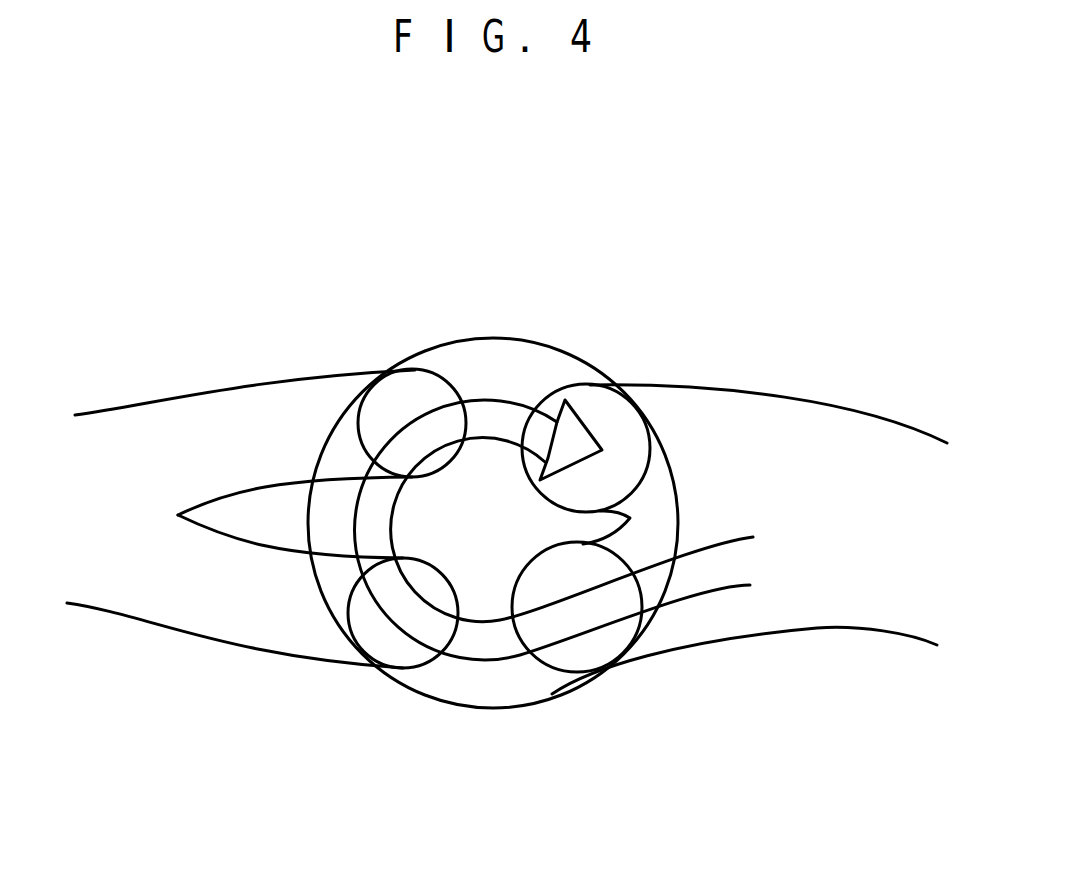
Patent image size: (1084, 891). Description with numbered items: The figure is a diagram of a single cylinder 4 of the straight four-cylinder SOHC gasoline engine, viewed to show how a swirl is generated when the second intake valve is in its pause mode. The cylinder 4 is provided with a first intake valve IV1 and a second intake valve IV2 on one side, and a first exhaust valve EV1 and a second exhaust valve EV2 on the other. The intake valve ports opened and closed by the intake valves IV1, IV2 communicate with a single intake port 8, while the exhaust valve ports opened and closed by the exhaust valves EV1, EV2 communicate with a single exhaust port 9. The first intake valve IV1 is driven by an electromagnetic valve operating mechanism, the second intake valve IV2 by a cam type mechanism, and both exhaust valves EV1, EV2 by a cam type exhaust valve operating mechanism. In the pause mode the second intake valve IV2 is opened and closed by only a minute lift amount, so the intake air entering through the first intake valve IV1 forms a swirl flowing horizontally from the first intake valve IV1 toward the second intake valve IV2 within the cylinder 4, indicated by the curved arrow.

The cylinder 4 is at (483, 340).
The intake port 8 is at (780, 432).
The exhaust port 9 is at (123, 435).
The first exhaust valve EV1 is at (398, 652).
The second exhaust valve EV2 is at (405, 388).
The first intake valve IV1 is at (587, 657).
The second intake valve IV2 is at (598, 408).